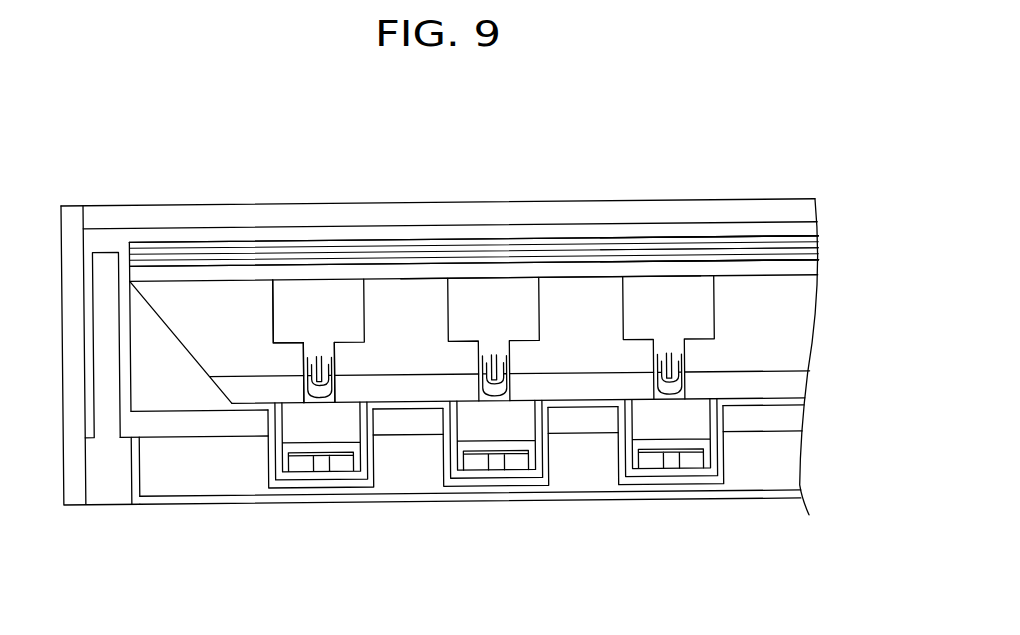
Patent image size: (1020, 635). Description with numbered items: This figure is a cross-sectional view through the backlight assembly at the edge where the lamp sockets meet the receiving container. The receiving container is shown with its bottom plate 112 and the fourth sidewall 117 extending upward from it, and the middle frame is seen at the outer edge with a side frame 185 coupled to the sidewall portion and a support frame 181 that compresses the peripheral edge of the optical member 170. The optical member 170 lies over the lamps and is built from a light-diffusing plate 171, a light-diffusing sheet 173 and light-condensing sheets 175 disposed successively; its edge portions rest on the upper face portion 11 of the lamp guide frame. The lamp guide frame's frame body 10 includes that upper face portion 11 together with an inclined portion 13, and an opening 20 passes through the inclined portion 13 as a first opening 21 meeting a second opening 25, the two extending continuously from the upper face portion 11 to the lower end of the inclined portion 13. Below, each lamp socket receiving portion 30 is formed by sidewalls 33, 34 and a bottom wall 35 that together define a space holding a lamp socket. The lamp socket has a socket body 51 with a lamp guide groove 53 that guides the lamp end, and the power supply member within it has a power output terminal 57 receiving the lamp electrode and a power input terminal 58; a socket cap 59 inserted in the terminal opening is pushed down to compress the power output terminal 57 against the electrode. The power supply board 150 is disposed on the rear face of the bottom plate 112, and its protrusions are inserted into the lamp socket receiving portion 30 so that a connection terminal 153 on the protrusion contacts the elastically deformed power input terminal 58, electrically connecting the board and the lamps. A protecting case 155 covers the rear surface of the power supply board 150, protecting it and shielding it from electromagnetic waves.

The frame body 10 is at (540, 156).
The upper face portion 11 is at (553, 280).
The inclined portion 13 is at (592, 300).
The opening 20 is at (265, 156).
The first opening 21 is at (302, 345).
The second opening 25 is at (272, 312).
The lamp socket receiving portion 30 is at (387, 571).
The sidewall 33 is at (266, 458).
The sidewall 34 is at (363, 455).
The bottom wall 35 is at (323, 484).
The socket body 51 is at (472, 475).
The lamp guide groove 53 is at (318, 405).
The power output terminal 57 is at (287, 384).
The power input terminal 58 is at (512, 466).
The socket cap 59 is at (333, 360).
The bottom plate 112 is at (578, 424).
The fourth sidewall 117 is at (91, 423).
The power supply board 150 is at (692, 445).
The connection terminal 153 is at (652, 452).
The protecting case 155 is at (777, 496).
The optical member 170 is at (680, 156).
The light-diffusing plate 171 is at (783, 257).
The light-diffusing sheet 173 is at (744, 249).
The light-condensing sheets 175 is at (695, 240).
The support frame 181 is at (181, 236).
The side frame 185 is at (73, 486).